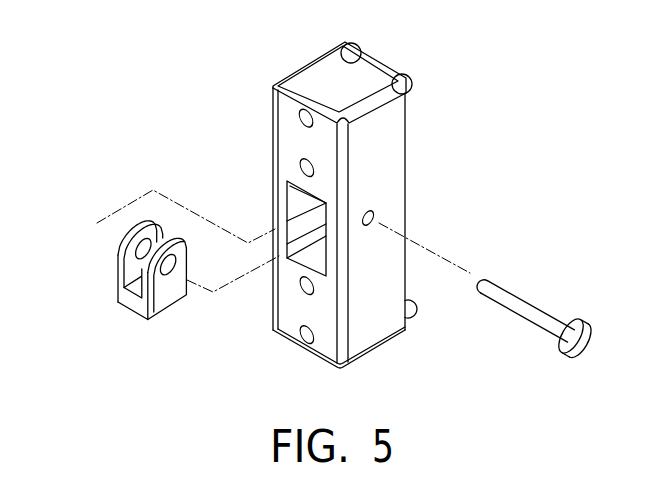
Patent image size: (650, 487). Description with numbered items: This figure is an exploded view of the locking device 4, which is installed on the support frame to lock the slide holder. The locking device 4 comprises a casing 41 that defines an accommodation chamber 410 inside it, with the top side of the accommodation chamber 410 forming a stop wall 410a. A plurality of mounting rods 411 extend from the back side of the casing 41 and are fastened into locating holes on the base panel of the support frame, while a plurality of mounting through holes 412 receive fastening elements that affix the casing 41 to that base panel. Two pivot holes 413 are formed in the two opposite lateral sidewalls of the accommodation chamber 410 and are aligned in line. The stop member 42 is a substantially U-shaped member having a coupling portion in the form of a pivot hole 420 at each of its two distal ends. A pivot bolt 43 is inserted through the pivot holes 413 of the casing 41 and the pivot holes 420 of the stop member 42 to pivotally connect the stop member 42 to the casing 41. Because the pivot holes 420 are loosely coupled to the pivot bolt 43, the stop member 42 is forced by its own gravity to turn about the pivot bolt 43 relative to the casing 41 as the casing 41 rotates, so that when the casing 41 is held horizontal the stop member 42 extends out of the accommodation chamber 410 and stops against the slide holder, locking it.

The locking device 4 is at (146, 144).
The casing 41 is at (387, 157).
The accommodation chamber 410 is at (293, 206).
The stop wall 410a is at (314, 201).
The mounting rods 411 is at (361, 46).
The mounting through holes 412 is at (300, 117).
The pivot holes 413 is at (377, 219).
The stop member 42 is at (130, 276).
The pivot hole 420 is at (137, 248).
The pivot bolt 43 is at (520, 306).